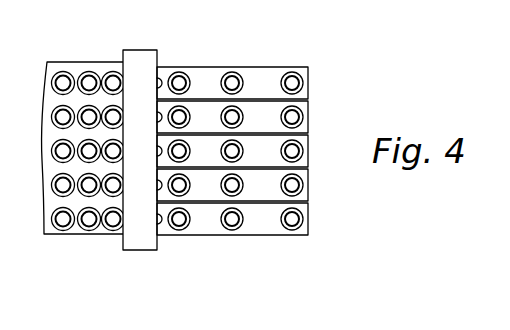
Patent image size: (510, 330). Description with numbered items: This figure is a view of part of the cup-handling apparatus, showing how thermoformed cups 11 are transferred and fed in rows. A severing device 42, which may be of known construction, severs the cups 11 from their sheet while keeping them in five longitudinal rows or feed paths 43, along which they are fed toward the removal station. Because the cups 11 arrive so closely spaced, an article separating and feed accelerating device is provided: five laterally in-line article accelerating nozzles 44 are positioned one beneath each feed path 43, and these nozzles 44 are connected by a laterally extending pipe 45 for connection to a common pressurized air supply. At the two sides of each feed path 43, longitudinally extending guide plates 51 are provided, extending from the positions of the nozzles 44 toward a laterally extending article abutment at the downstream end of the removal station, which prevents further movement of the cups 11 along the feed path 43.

The cups 11 is at (89, 72).
The severing device 42 is at (243, 162).
The feed paths 43 is at (235, 151).
The article accelerating nozzles 44 is at (165, 79).
The laterally extending pipe 45 is at (140, 58).
The guide plates 51 is at (308, 67).